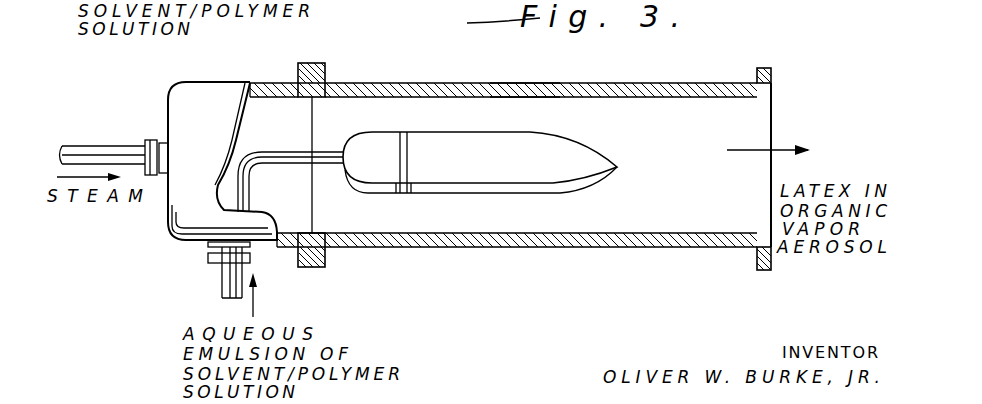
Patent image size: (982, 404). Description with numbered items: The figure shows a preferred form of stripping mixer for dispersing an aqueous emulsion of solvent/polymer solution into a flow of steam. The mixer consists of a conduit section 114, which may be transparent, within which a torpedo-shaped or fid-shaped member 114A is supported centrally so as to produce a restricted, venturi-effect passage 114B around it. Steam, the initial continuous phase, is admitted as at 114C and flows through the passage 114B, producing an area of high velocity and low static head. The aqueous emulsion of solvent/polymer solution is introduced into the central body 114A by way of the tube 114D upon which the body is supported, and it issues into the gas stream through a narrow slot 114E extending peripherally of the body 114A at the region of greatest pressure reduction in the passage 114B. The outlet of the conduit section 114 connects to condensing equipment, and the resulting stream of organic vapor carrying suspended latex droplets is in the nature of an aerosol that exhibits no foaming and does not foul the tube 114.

The conduit section 114 is at (530, 243).
The torpedo-shaped member 114A is at (587, 157).
The passage 114B is at (545, 77).
The steam inlet 114C is at (128, 134).
The tube 114D is at (222, 288).
The narrow slot 114E is at (400, 186).